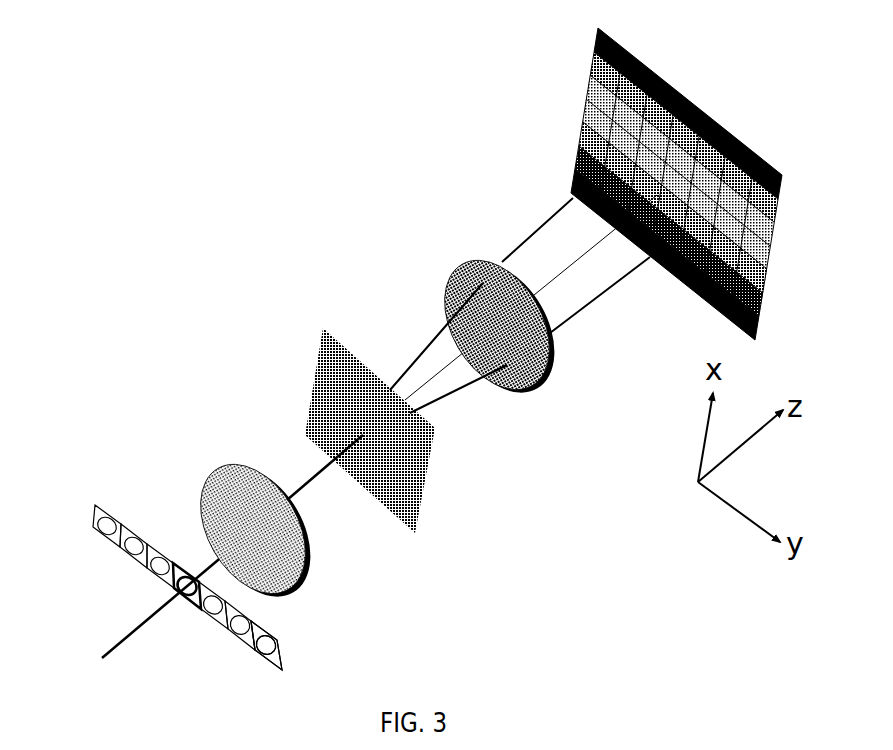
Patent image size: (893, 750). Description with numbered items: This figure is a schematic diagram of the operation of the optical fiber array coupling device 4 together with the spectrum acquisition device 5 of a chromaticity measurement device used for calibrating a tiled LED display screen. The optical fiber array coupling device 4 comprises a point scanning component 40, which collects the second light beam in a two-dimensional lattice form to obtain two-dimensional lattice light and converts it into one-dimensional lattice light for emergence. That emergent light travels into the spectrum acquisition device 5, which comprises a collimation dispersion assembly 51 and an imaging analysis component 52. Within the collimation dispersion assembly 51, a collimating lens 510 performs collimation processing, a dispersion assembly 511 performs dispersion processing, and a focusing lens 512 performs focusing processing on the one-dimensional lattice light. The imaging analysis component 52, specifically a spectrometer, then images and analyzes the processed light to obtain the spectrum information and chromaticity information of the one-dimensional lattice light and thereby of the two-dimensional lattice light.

The optical fiber array coupling device 4 is at (97, 518).
The point scanning component 40 is at (277, 642).
The spectrum acquisition device 5 is at (260, 238).
The collimation dispersion assembly 51 is at (253, 343).
The collimating lens 510 is at (208, 487).
The dispersion assembly 511 is at (323, 357).
The focusing lens 512 is at (453, 293).
The imaging analysis component 52 is at (585, 108).